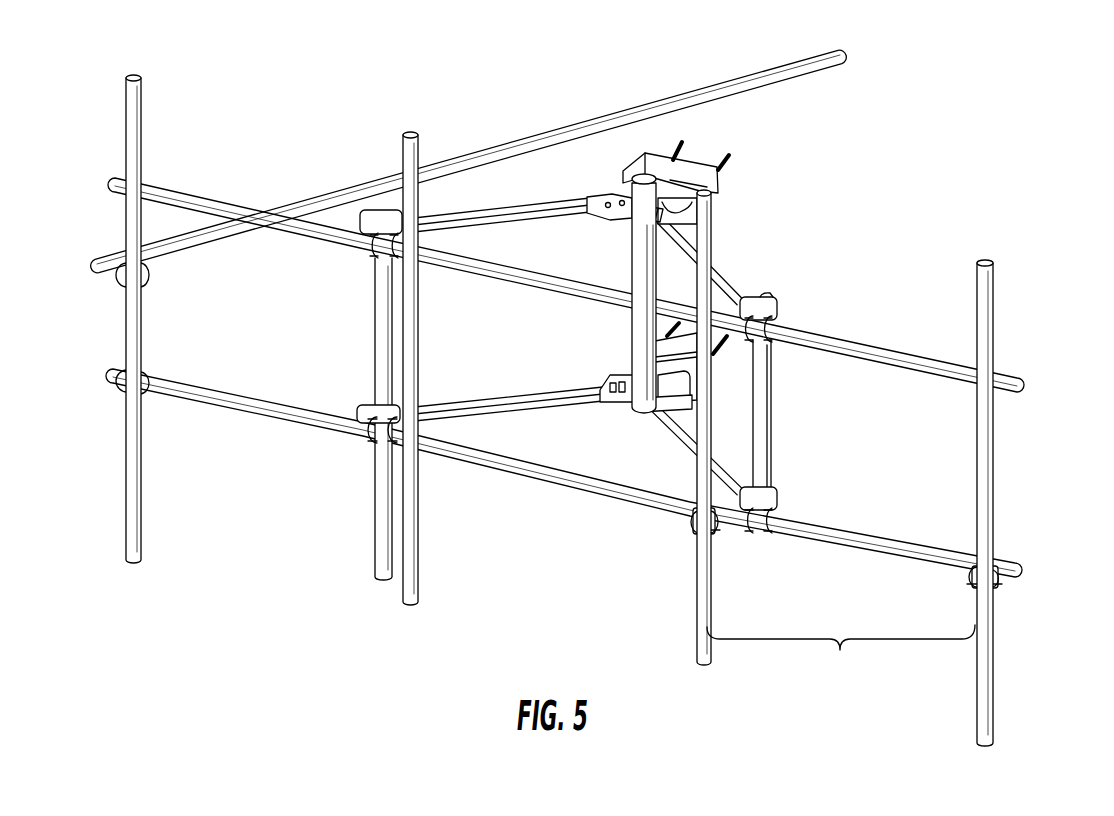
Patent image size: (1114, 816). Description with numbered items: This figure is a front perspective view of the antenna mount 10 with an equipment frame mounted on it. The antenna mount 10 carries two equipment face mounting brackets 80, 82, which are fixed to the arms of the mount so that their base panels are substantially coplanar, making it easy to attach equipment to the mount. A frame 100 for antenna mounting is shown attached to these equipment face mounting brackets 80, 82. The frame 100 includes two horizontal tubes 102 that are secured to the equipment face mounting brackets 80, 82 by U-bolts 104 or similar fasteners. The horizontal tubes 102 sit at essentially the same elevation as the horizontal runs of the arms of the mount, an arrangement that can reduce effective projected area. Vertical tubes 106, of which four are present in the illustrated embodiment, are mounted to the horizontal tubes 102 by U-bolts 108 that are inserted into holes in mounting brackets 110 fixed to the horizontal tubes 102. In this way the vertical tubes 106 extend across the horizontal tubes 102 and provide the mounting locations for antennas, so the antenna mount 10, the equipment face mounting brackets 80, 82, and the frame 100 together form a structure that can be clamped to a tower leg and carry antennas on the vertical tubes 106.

The antenna mount 10 is at (793, 185).
The equipment face mounting bracket 80 is at (778, 491).
The equipment face mounting bracket 82 is at (779, 309).
The frame 100 is at (1027, 363).
The horizontal tube 102 is at (910, 360).
The U-bolt 104 is at (777, 330).
The vertical tube 106 is at (841, 657).
The U-bolt 108 is at (693, 527).
The mounting bracket 110 is at (714, 528).